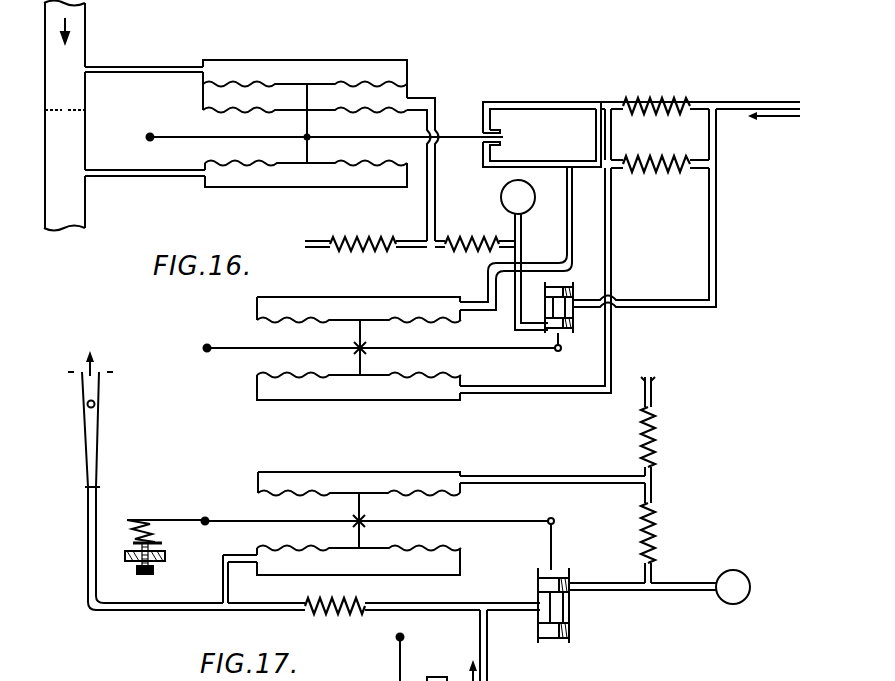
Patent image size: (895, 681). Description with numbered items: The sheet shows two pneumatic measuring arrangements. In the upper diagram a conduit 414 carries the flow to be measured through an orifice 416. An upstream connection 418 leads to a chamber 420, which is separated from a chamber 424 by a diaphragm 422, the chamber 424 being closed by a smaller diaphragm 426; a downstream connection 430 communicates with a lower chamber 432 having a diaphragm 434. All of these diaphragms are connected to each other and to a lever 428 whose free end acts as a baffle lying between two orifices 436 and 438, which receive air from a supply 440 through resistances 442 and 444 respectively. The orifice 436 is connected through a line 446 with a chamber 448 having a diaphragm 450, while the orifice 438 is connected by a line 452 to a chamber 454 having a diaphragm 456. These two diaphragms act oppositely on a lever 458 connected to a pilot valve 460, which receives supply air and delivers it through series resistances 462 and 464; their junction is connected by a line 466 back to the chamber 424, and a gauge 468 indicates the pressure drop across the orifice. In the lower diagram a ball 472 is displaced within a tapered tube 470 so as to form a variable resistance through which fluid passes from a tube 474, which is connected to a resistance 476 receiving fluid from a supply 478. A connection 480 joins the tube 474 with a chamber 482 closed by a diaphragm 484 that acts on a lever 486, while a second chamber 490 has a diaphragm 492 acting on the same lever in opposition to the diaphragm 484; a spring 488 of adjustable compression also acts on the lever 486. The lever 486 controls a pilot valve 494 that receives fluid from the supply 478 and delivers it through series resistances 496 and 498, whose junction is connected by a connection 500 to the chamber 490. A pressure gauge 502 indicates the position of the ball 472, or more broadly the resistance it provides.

In FIG. 16, the conduit 414 is at (87, 31).
In FIG. 16, the orifice 416 is at (70, 109).
In FIG. 16, the upstream connection 418 is at (138, 66).
In FIG. 16, the chamber 420 is at (231, 61).
In FIG. 16, the diaphragm 422 is at (345, 87).
In FIG. 16, the chamber 424 is at (225, 104).
In FIG. 16, the smaller diaphragm 426 is at (345, 110).
In FIG. 16, the lever 428 is at (456, 136).
In FIG. 16, the downstream connection 430 is at (128, 169).
In FIG. 16, the lower chamber 432 is at (226, 186).
In FIG. 16, the diaphragm 434 is at (351, 162).
In FIG. 16, the orifice 436 is at (496, 131).
In FIG. 16, the orifice 438 is at (498, 145).
In FIG. 16, the supply 440 is at (733, 112).
In FIG. 16, the resistance 442 is at (650, 97).
In FIG. 16, the resistance 444 is at (652, 159).
In FIG. 16, the line 446 is at (612, 237).
In FIG. 16, the chamber 448 is at (295, 378).
In FIG. 16, the diaphragm 450 is at (407, 376).
In FIG. 16, the line 452 is at (565, 237).
In FIG. 16, the chamber 454 is at (288, 306).
In FIG. 16, the diaphragm 456 is at (408, 316).
In FIG. 16, the lever 458 is at (480, 347).
In FIG. 16, the pilot valve 460 is at (572, 335).
In FIG. 16, the resistance 462 is at (466, 240).
In FIG. 16, the resistance 464 is at (362, 240).
In FIG. 16, the line 466 is at (437, 172).
In FIG. 16, the gauge 468 is at (500, 197).
In FIG. 17, the tapered tube 470 is at (103, 389).
In FIG. 17, the ball 472 is at (87, 405).
In FIG. 17, the tube 474 is at (87, 546).
In FIG. 17, the resistance 476 is at (364, 598).
In FIG. 17, the supply 478 is at (478, 638).
In FIG. 17, the connection 480 is at (222, 581).
In FIG. 17, the chamber 482 is at (285, 553).
In FIG. 17, the diaphragm 484 is at (407, 550).
In FIG. 17, the lever 486 is at (486, 520).
In FIG. 17, the spring 488 is at (158, 539).
In FIG. 17, the second chamber 490 is at (283, 478).
In FIG. 17, the diaphragm 492 is at (401, 495).
In FIG. 17, the pilot valve 494 is at (577, 626).
In FIG. 17, the resistance 496 is at (658, 537).
In FIG. 17, the resistance 498 is at (658, 440).
In FIG. 17, the connection 500 is at (489, 478).
In FIG. 17, the pressure gauge 502 is at (741, 564).